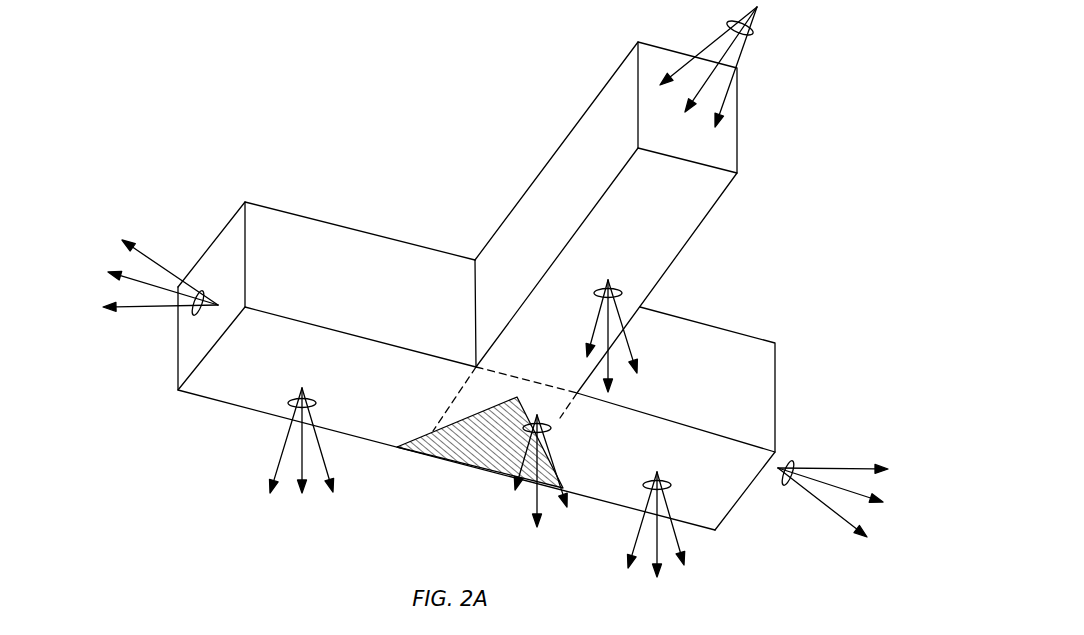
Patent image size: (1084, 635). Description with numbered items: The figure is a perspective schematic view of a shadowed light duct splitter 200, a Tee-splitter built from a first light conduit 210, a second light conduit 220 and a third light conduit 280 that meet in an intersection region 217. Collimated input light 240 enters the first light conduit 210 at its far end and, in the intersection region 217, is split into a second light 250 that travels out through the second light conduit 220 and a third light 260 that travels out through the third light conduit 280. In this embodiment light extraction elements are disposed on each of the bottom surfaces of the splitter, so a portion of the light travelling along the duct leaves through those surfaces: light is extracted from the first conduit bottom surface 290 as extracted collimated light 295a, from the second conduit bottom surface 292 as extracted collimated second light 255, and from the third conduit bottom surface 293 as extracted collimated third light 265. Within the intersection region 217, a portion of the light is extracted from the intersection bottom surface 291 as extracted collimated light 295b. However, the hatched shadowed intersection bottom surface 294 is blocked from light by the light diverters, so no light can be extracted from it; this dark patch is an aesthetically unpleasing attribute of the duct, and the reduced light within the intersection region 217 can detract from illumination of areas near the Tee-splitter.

The shadowed light duct splitter 200 is at (495, 292).
The first light conduit 210 is at (570, 133).
The second light conduit 220 is at (308, 217).
The third light conduit 280 is at (738, 333).
The collimated input light 240 is at (748, 36).
The second light 250 is at (203, 297).
The extracted collimated second light 255 is at (287, 403).
The third light 260 is at (797, 463).
The extracted collimated third light 265 is at (643, 486).
The first conduit bottom surface 290 is at (658, 237).
The intersection bottom surface 291 is at (478, 395).
The second conduit bottom surface 292 is at (288, 359).
The third conduit bottom surface 293 is at (738, 475).
The shadowed intersection bottom surface 294 is at (487, 455).
The extracted collimated light 295a is at (621, 292).
The extracted collimated light 295b is at (551, 424).
The intersection region 217 is at (424, 485).